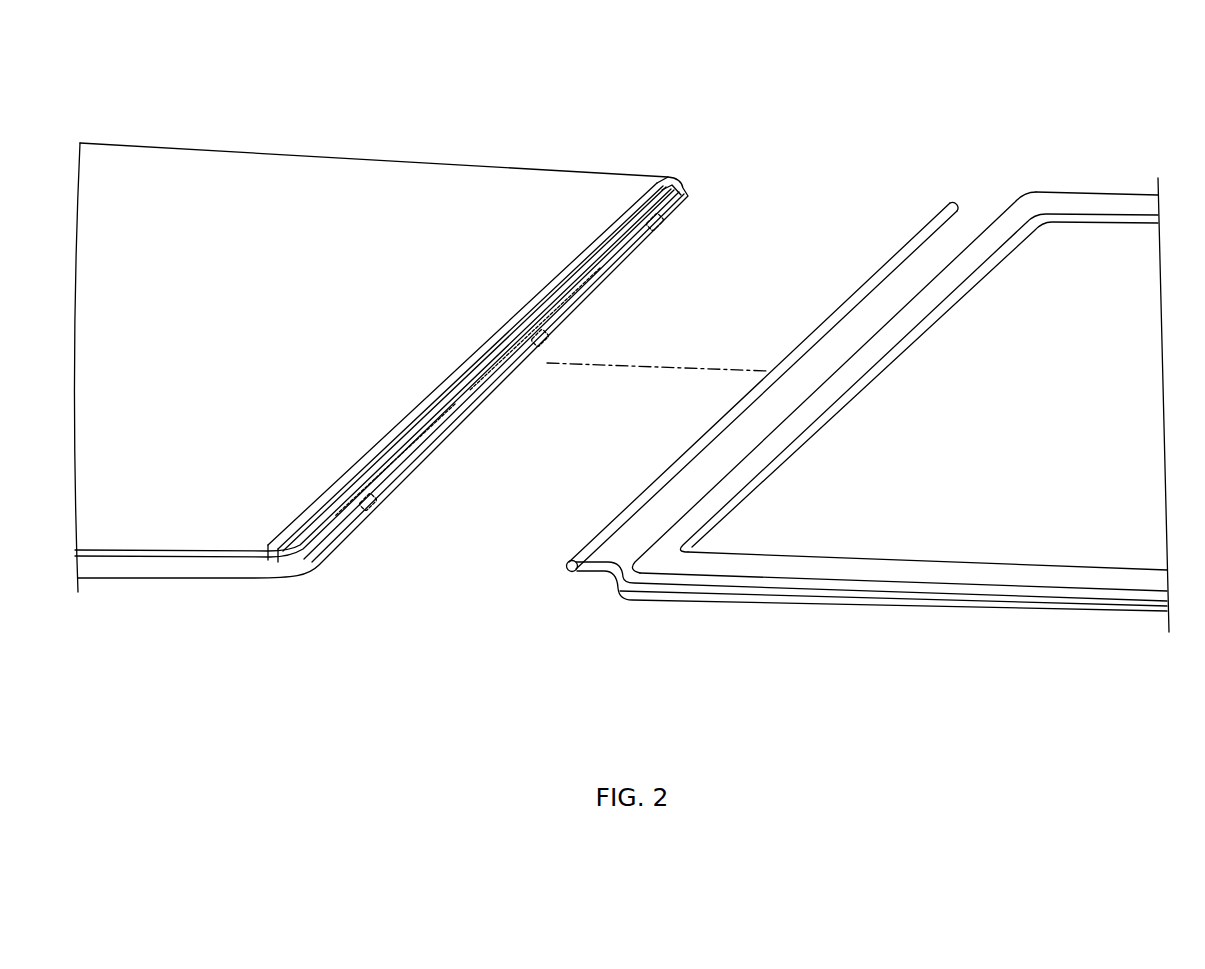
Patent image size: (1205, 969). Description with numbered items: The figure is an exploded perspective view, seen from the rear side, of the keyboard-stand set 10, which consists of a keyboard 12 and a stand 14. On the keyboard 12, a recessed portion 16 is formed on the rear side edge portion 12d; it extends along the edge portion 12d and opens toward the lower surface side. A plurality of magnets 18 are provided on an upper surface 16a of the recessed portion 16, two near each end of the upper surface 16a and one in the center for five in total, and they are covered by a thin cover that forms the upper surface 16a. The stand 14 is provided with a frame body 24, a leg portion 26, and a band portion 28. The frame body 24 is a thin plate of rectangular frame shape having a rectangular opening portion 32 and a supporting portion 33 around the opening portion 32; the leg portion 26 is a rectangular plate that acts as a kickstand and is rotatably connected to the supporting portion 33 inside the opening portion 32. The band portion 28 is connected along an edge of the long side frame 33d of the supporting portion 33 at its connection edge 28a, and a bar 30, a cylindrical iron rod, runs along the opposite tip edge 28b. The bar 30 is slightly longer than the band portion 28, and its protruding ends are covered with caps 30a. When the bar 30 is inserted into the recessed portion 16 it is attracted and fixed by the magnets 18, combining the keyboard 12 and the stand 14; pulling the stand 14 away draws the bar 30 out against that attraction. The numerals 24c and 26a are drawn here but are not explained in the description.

The keyboard-stand set 10 is at (1072, 40).
The keyboard 12 is at (660, 103).
The edge portion 12d is at (500, 385).
The stand 14 is at (940, 133).
The recessed portion 16 is at (418, 457).
The upper surface 16a is at (465, 410).
The magnets 18 is at (657, 228).
The frame body 24 is at (927, 575).
The display panel edge 24c is at (872, 591).
The leg portion 26 is at (1063, 513).
The cover plate edge 26a is at (728, 511).
The band portion 28 is at (898, 283).
The connection edge 28a is at (868, 343).
The tip edge 28b is at (803, 352).
The bar 30 is at (694, 440).
The caps 30a is at (954, 200).
The opening portion 32 is at (977, 557).
The supporting portion 33 is at (1103, 204).
The long side frame 33d is at (800, 423).